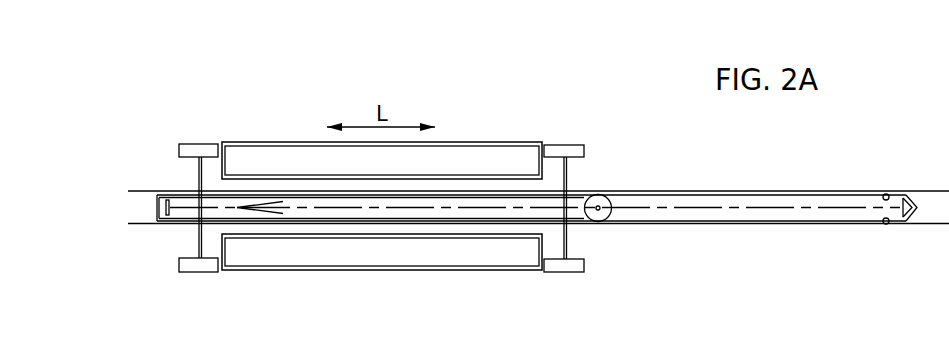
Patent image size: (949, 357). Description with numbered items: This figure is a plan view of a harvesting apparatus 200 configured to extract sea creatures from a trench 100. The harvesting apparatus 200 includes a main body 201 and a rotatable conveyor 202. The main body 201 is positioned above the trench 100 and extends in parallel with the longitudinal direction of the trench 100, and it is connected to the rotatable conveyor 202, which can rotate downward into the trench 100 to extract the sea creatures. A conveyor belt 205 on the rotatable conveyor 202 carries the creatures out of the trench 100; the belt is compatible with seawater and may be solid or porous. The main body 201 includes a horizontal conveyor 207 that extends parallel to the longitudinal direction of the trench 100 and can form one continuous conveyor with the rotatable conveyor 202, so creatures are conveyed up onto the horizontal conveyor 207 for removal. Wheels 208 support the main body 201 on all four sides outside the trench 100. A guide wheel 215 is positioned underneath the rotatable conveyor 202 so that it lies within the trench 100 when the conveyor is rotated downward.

The trench 100 is at (932, 222).
The harvesting apparatus 200 is at (221, 92).
The main body 201 is at (420, 271).
The rotatable conveyor 202 is at (747, 226).
The conveyor belt 205 is at (790, 215).
The horizontal conveyor 207 is at (180, 213).
The wheels 208 is at (570, 268).
The guide wheel 215 is at (597, 224).